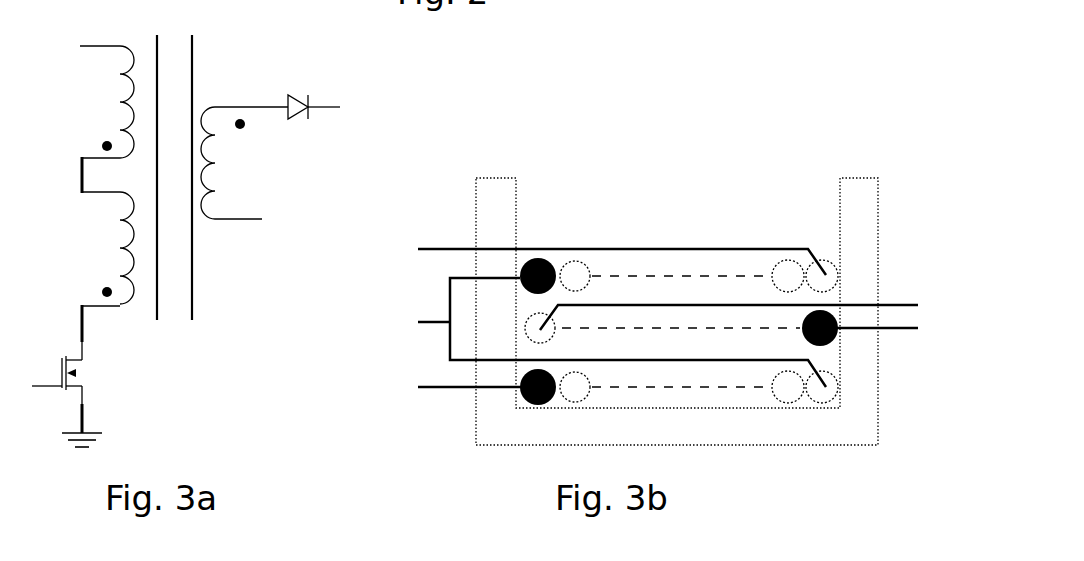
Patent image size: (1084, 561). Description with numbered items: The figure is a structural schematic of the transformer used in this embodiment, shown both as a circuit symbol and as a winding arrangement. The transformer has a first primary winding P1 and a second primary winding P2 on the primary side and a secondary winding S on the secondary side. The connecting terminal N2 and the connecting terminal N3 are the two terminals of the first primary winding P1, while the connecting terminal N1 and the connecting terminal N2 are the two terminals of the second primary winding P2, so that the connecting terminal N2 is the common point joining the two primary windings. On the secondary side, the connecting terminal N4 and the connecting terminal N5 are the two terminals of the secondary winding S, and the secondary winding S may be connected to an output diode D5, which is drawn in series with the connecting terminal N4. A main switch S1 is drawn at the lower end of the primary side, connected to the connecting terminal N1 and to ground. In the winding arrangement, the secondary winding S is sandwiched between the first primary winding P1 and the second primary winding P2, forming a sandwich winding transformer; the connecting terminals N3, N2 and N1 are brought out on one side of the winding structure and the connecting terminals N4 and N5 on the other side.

In FIG. 3A, the connecting terminal N1 is at (76, 315).
In FIG. 3B, the connecting terminal N1 is at (466, 387).
In FIG. 3A, the connecting terminal N2 is at (77, 175).
In FIG. 3B, the connecting terminal N2 is at (601, 332).
In FIG. 3A, the connecting terminal N3 is at (77, 52).
In FIG. 3B, the connecting terminal N3 is at (601, 267).
In FIG. 3A, the connecting terminal N4 is at (251, 106).
In FIG. 3B, the connecting terminal N4 is at (744, 312).
In FIG. 3A, the connecting terminal N5 is at (238, 205).
In FIG. 3B, the connecting terminal N5 is at (875, 328).
In FIG. 3A, the first primary winding P1 is at (102, 102).
In FIG. 3A, the second primary winding P2 is at (102, 248).
In FIG. 3A, the secondary winding S is at (231, 163).
In FIG. 3A, the main switch S1 is at (80, 393).
In FIG. 3A, the output diode D5 is at (311, 89).